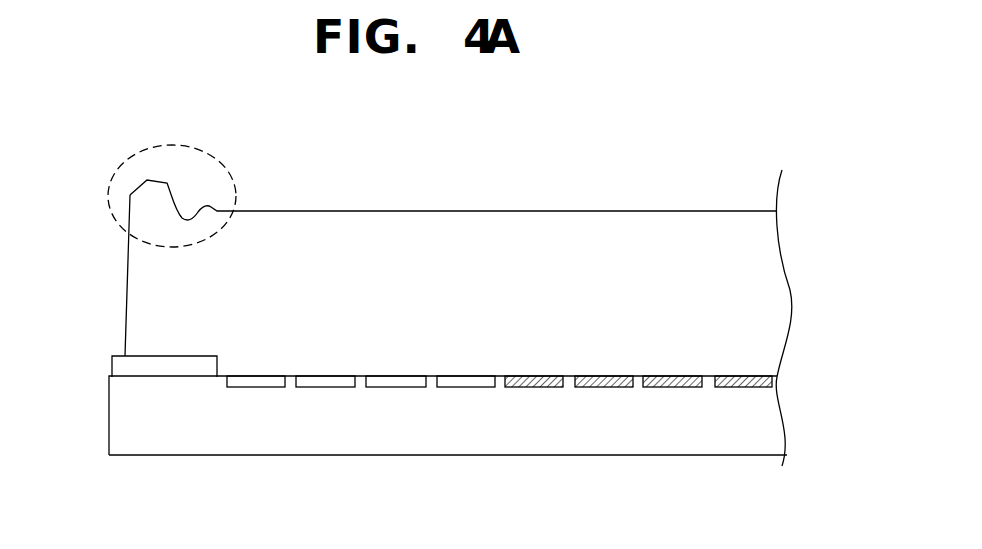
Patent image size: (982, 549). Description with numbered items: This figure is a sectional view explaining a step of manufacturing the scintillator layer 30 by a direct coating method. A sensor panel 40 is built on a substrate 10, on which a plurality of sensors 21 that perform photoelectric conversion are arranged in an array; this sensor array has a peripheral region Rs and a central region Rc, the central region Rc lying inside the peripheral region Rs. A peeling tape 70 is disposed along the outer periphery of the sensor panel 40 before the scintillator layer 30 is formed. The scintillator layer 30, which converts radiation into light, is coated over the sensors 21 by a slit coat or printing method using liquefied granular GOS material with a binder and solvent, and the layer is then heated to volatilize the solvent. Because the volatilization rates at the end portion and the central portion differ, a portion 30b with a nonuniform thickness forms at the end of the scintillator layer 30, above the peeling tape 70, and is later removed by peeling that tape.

The substrate 10 is at (181, 458).
The sensors 21 is at (760, 375).
The scintillator layer 30 is at (612, 208).
The portion with a nonuniform thickness 30b is at (235, 187).
The sensor panel 40 is at (98, 378).
The peeling tape 70 is at (109, 365).
The peripheral region Rs is at (493, 396).
The central region Rc is at (770, 396).